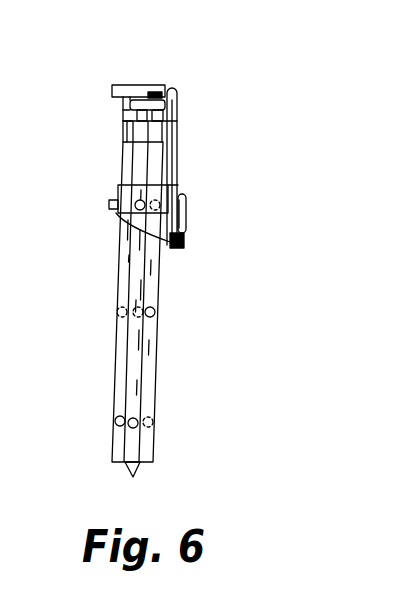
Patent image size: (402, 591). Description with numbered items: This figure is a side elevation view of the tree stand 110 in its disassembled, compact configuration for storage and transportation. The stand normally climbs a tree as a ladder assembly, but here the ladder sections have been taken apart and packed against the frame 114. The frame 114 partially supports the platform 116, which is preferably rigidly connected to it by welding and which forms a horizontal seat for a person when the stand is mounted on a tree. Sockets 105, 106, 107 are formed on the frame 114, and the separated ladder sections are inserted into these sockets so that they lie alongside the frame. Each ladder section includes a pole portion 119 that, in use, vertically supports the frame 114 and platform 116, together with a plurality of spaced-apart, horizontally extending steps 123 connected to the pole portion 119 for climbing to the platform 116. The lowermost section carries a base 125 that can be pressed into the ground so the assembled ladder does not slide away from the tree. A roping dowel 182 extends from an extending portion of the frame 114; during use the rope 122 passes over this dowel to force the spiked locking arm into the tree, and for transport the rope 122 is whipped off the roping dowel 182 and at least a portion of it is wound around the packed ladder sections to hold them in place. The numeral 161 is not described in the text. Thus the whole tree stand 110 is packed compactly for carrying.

The tree stand 110 is at (138, 82).
The frame 114 is at (169, 87).
The socket 105 is at (128, 117).
The socket 106 is at (130, 121).
The socket 107 is at (165, 115).
The platform 116 is at (178, 153).
The rope 122 is at (177, 188).
The roping dowel 182 is at (187, 207).
The collar 161 is at (108, 205).
The pole portion 119 is at (155, 352).
The steps 123 is at (120, 416).
The base 125 is at (133, 470).